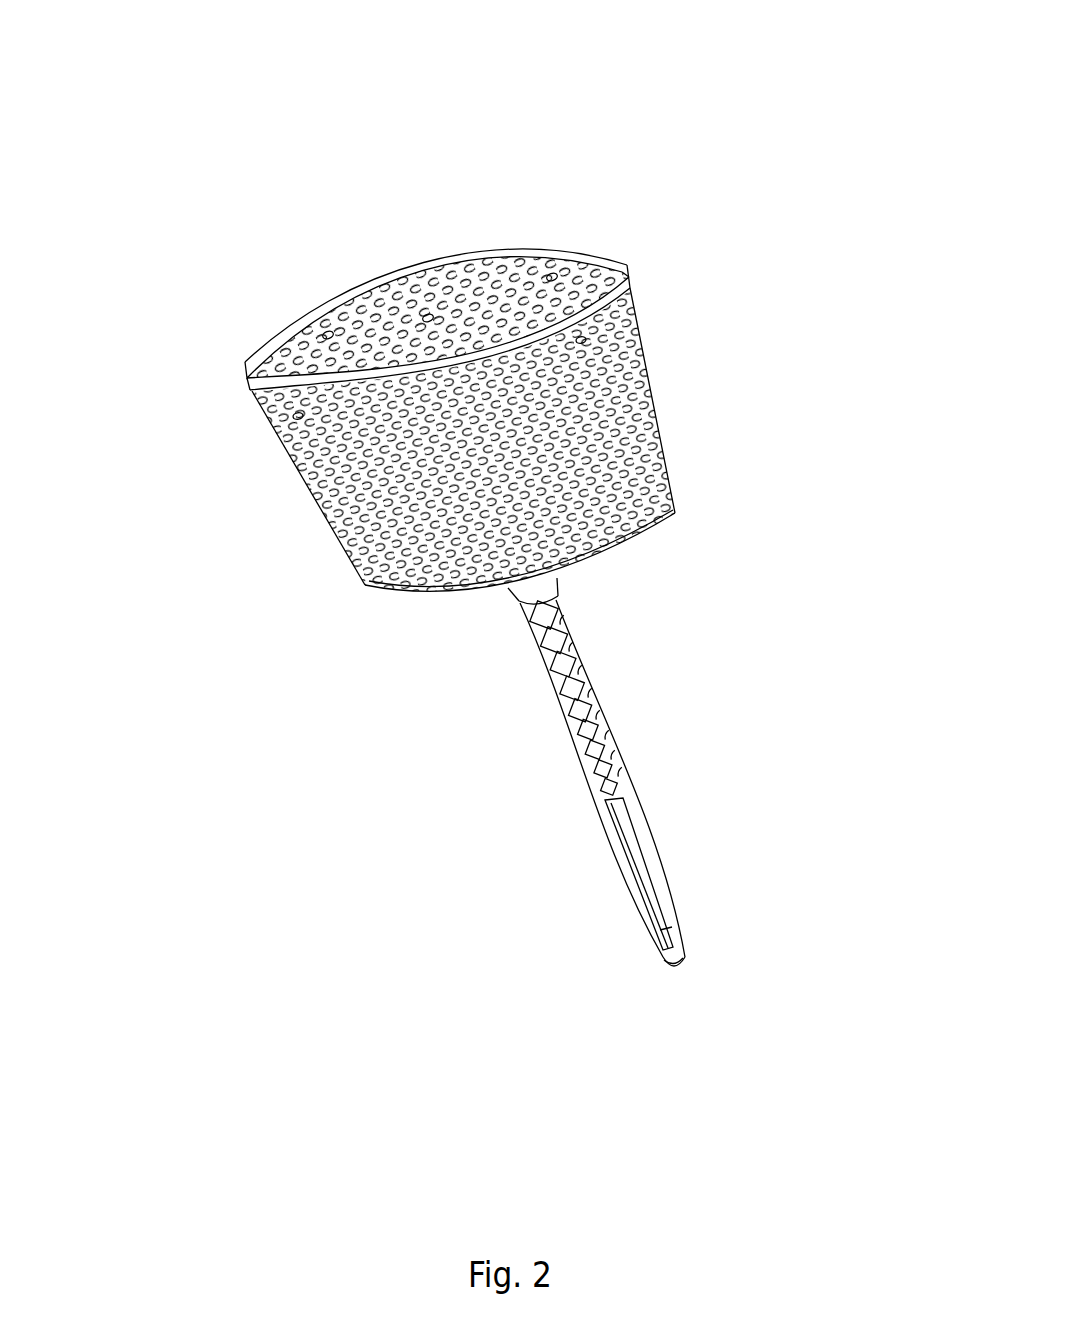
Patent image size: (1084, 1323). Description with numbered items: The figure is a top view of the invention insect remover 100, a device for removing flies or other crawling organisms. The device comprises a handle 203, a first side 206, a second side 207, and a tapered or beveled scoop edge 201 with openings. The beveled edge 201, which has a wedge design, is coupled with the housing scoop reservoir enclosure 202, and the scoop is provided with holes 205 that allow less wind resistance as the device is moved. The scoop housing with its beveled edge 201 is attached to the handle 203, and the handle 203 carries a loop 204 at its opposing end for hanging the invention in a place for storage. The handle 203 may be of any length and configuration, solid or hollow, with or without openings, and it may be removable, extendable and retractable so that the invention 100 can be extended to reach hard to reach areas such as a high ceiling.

The invention insect remover 100 is at (500, 520).
The tapered or beveled scoop edge 201 is at (467, 234).
The housing scoop reservoir enclosure 202 is at (419, 331).
The handle 203 is at (466, 804).
The loop 204 is at (652, 966).
The holes 205 is at (589, 330).
The first side 206 is at (287, 424).
The second side 207 is at (316, 328).